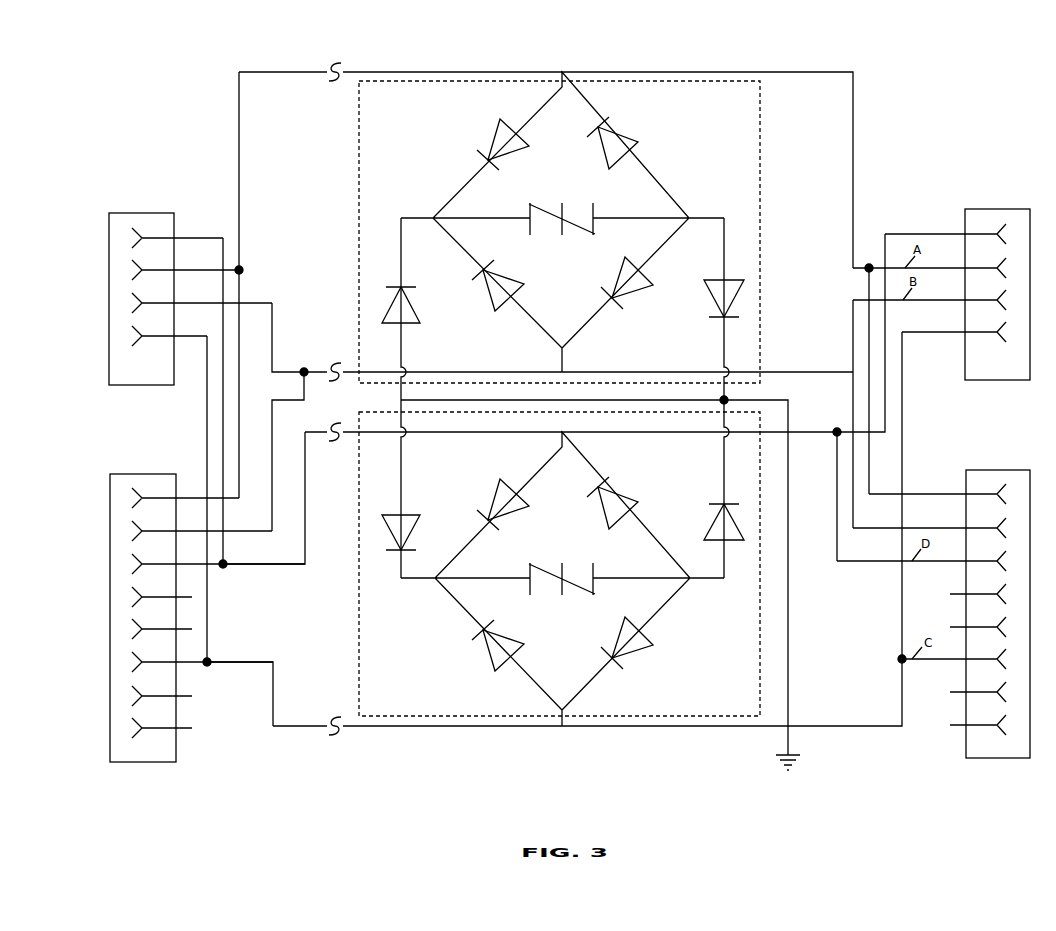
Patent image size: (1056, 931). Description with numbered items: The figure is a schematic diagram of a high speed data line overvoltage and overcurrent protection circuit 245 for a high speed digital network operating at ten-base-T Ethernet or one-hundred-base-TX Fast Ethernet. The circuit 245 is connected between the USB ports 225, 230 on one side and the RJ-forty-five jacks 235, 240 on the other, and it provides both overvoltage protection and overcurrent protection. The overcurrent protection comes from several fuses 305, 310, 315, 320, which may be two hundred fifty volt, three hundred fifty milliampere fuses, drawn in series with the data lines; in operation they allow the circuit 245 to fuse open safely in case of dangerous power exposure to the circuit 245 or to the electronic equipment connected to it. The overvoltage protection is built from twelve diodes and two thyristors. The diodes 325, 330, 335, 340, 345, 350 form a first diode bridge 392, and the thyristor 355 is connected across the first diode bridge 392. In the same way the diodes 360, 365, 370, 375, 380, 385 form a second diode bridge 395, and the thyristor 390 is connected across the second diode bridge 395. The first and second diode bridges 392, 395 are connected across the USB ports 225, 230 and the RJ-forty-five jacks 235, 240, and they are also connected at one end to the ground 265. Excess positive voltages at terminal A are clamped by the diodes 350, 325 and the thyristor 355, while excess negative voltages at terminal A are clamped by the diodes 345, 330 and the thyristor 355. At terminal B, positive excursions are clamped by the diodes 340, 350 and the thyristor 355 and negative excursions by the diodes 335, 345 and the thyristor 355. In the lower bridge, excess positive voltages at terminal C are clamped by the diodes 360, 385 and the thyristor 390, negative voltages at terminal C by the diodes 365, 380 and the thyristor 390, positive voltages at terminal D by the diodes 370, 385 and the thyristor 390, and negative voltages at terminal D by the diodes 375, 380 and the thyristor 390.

The USB port 225 is at (190, 299).
The USB port 230 is at (941, 294).
The RJ-45 jack 235 is at (207, 618).
The RJ-45 jack 240 is at (933, 614).
The high speed data line overvoltage and overcurrent protection circuit 245 is at (897, 127).
The ground 265 is at (790, 772).
The fuse 305 is at (338, 64).
The fuse 310 is at (334, 366).
The fuse 315 is at (336, 426).
The fuse 320 is at (334, 722).
The diode 325 is at (503, 144).
The diode 330 is at (612, 143).
The diode 335 is at (627, 283).
The diode 340 is at (498, 285).
The diode 345 is at (401, 305).
The diode 350 is at (724, 298).
The thyristor 355 is at (553, 204).
The diode 360 is at (498, 645).
The diode 365 is at (627, 643).
The diode 370 is at (503, 504).
The diode 375 is at (612, 503).
The diode 380 is at (401, 532).
The diode 385 is at (724, 522).
The thyristor 390 is at (553, 564).
The first diode bridge 392 is at (359, 124).
The second diode bridge 395 is at (359, 480).